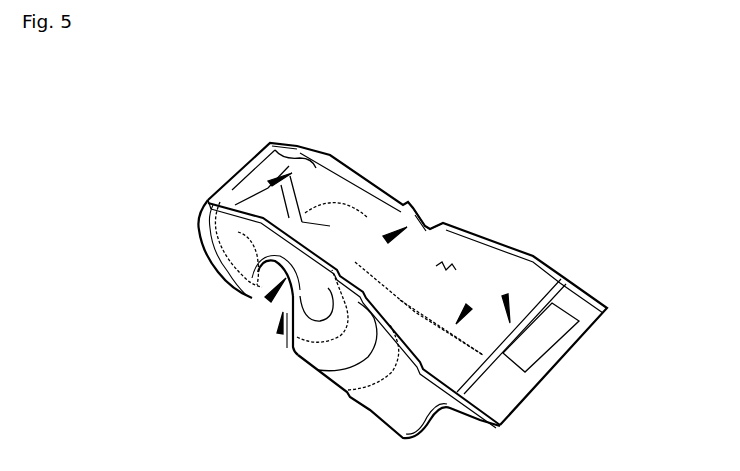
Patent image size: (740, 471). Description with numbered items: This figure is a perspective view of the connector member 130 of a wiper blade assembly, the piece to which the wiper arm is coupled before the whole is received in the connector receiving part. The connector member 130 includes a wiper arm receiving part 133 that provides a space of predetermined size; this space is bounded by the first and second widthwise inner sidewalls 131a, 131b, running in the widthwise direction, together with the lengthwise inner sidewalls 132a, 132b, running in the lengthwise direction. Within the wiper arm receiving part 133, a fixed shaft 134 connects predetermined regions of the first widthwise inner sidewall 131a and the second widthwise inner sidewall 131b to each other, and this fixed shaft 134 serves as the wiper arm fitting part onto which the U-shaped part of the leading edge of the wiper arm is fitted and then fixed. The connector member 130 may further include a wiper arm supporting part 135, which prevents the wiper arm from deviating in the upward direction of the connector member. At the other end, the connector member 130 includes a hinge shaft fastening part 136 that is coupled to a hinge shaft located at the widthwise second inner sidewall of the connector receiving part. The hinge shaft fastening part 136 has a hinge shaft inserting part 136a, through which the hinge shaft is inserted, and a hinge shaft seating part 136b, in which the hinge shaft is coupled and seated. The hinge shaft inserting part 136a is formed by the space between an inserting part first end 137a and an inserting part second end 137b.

The connector member 130 is at (582, 160).
The first widthwise inner sidewall 131a is at (477, 290).
The second widthwise inner sidewall 131b is at (373, 235).
The lengthwise inner sidewall 132a is at (297, 146).
The lengthwise inner sidewall 132b is at (505, 276).
The wiper arm receiving part 133 is at (443, 242).
The fixed shaft 134 is at (305, 218).
The wiper arm supporting part 135 is at (547, 337).
The hinge shaft fastening part 136 is at (252, 407).
The hinge shaft inserting part 136a is at (280, 335).
The hinge shaft seating part 136b is at (258, 290).
The inserting part first end 137a is at (237, 270).
The inserting part second end 137b is at (310, 335).